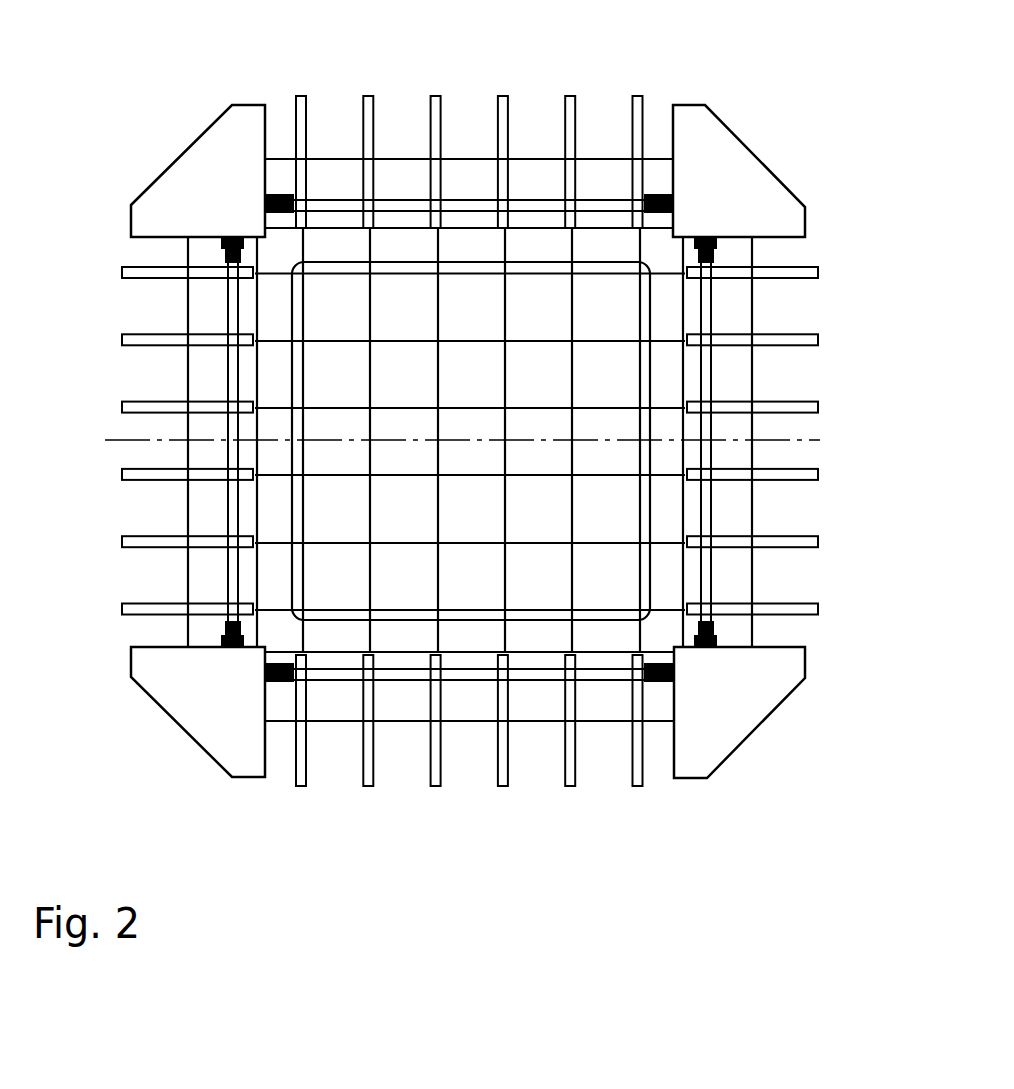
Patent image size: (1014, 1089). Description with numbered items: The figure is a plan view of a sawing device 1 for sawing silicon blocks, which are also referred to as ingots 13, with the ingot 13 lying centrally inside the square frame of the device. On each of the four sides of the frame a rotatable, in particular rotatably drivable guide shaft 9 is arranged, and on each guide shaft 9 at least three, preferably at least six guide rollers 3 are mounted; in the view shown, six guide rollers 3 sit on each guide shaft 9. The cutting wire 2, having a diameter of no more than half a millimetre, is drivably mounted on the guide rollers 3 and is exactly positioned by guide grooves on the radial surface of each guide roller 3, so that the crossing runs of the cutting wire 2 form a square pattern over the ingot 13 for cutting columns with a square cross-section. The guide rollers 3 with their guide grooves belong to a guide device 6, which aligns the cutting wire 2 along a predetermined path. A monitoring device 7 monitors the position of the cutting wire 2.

The sawing device 1 is at (837, 272).
The cutting wire 2 is at (643, 642).
The guide roller 3 is at (807, 343).
The guide device 6 is at (803, 432).
The monitoring device 7 is at (457, 197).
The guide shaft 9 is at (395, 155).
The ingot 13 is at (608, 526).